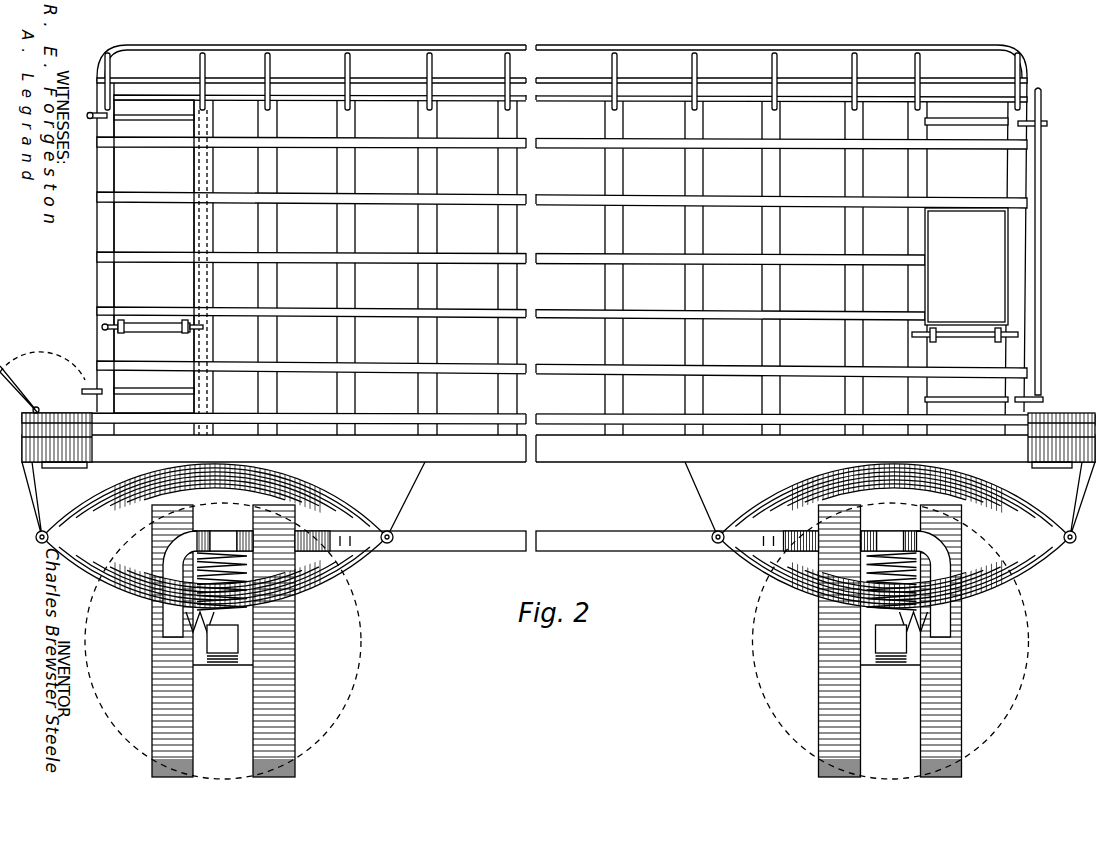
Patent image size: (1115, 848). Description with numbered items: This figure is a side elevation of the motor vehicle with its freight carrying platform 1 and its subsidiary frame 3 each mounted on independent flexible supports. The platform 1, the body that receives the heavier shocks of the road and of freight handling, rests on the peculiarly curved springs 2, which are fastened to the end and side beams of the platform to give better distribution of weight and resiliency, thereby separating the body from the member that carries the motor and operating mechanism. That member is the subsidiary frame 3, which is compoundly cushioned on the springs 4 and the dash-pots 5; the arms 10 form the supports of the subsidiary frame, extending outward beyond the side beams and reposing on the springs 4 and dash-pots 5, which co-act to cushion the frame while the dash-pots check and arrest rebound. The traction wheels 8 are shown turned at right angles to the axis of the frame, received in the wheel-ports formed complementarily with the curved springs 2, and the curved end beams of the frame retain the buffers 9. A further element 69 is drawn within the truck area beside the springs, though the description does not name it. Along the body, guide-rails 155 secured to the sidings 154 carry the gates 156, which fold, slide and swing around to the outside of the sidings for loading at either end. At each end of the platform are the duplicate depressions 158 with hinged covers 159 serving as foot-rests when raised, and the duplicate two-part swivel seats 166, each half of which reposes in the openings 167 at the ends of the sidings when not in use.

The platform 1 is at (558, 475).
The curved springs 2 is at (1005, 505).
The subsidiary frame 3 is at (556, 541).
The springs 4 is at (867, 571).
The dash-pots 5 is at (950, 601).
The traction wheels 8 is at (956, 668).
The buffers 9 is at (905, 629).
The arms 10 is at (557, 541).
The spring seat box 69 is at (557, 645).
The sidings 154 is at (562, 240).
The guide-rails 155 is at (968, 393).
The gates 156 is at (1044, 285).
The depressions 158 is at (1051, 470).
The hinged covers 159 is at (17, 389).
The seats 166 is at (150, 333).
The openings 167 is at (154, 256).